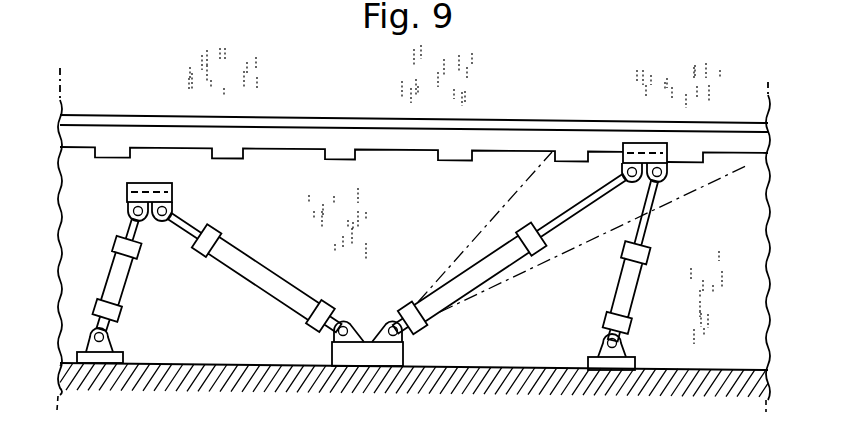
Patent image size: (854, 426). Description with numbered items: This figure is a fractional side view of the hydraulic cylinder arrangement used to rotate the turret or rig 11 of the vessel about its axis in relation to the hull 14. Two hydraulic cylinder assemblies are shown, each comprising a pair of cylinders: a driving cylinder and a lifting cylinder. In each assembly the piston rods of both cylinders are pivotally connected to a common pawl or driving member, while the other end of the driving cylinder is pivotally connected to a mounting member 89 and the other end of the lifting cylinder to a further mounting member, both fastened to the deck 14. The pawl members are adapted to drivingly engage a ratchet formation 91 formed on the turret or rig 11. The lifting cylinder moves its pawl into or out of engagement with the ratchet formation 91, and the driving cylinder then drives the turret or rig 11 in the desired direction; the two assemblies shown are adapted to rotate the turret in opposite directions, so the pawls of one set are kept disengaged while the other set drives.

The turret or rig 11 is at (755, 110).
The hull 14 is at (762, 350).
The mounting member 89 is at (400, 356).
The ratchet formation 91 is at (357, 156).